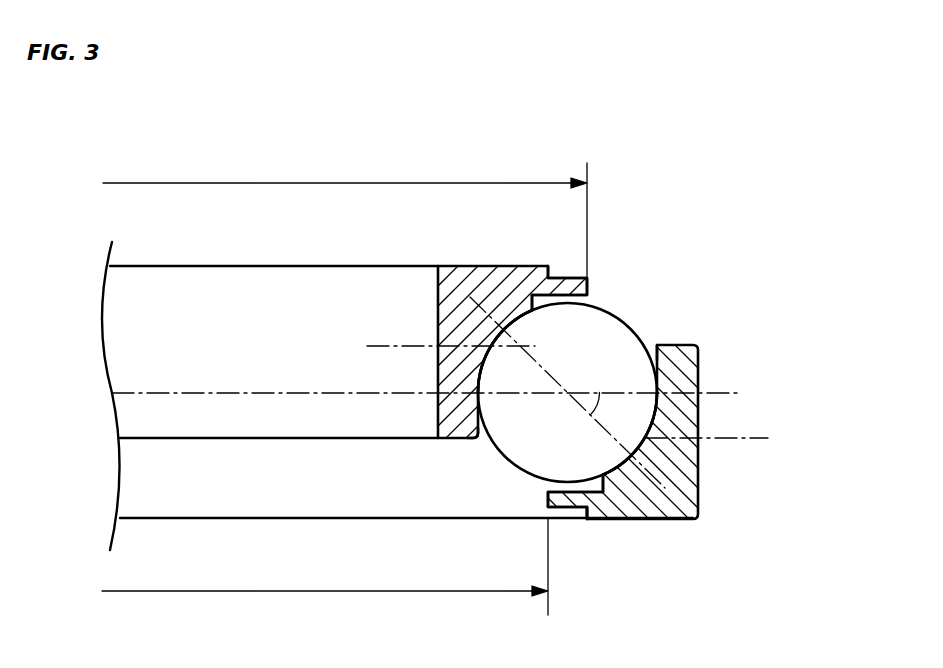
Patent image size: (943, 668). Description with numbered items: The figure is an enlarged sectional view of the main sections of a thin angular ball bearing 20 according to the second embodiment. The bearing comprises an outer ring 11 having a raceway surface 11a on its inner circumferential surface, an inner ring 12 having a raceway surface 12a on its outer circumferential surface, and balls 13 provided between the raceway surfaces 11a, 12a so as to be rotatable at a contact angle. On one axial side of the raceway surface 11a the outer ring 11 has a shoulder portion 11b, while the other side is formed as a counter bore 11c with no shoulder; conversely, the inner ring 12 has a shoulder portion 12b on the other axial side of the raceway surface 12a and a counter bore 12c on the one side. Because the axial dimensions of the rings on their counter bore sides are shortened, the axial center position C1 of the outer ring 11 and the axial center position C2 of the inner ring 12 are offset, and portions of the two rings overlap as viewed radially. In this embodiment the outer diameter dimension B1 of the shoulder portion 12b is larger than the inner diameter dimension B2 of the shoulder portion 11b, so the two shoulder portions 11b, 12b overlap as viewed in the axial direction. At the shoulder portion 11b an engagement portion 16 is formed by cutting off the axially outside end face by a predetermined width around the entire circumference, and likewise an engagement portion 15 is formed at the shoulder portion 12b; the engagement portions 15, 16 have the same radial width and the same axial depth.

The angular ball bearing 20 is at (705, 222).
The outer ring 11 is at (685, 466).
The raceway surface 11a is at (642, 515).
The shoulder portion 11b is at (600, 508).
The counter bore 11c is at (650, 350).
The inner ring 12 is at (450, 312).
The raceway surface 12a is at (528, 327).
The shoulder portion 12b is at (540, 267).
The counter bore 12c is at (490, 424).
The ball 13 is at (605, 342).
The engagement portion 15 is at (567, 285).
The engagement portion 16 is at (563, 500).
The outer diameter dimension B1 is at (345, 217).
The inner diameter dimension B2 is at (325, 571).
The center position C1 is at (745, 438).
The center position C2 is at (385, 348).